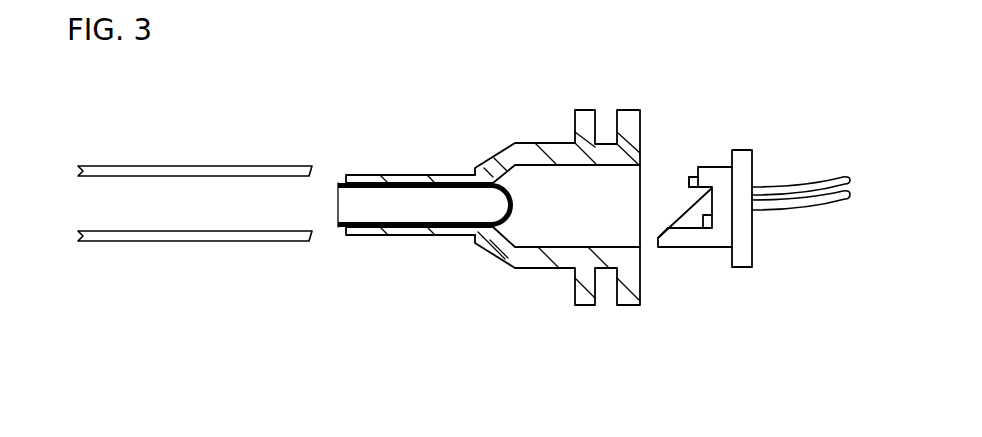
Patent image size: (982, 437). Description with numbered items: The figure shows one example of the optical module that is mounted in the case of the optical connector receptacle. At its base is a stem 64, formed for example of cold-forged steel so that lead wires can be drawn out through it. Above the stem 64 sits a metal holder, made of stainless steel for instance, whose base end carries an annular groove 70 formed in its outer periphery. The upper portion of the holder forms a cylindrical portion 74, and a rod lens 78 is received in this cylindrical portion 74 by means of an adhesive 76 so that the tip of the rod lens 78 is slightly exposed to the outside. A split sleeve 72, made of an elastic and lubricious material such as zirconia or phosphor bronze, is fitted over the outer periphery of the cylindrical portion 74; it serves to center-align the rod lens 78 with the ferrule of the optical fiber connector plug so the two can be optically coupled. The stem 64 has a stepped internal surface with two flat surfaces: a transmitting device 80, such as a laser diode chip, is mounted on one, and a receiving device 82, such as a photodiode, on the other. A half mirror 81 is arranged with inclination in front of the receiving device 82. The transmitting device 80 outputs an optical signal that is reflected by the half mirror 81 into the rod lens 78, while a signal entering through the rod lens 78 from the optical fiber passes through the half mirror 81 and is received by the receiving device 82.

The stem 64 is at (743, 162).
The annular groove 70 is at (606, 297).
The split sleeve 72 is at (202, 165).
The cylindrical portion 74 is at (408, 236).
The adhesive 76 is at (433, 185).
The rod lens 78 is at (377, 200).
The transmitting device 80 is at (690, 176).
The half mirror 81 is at (683, 213).
The receiving device 82 is at (712, 223).